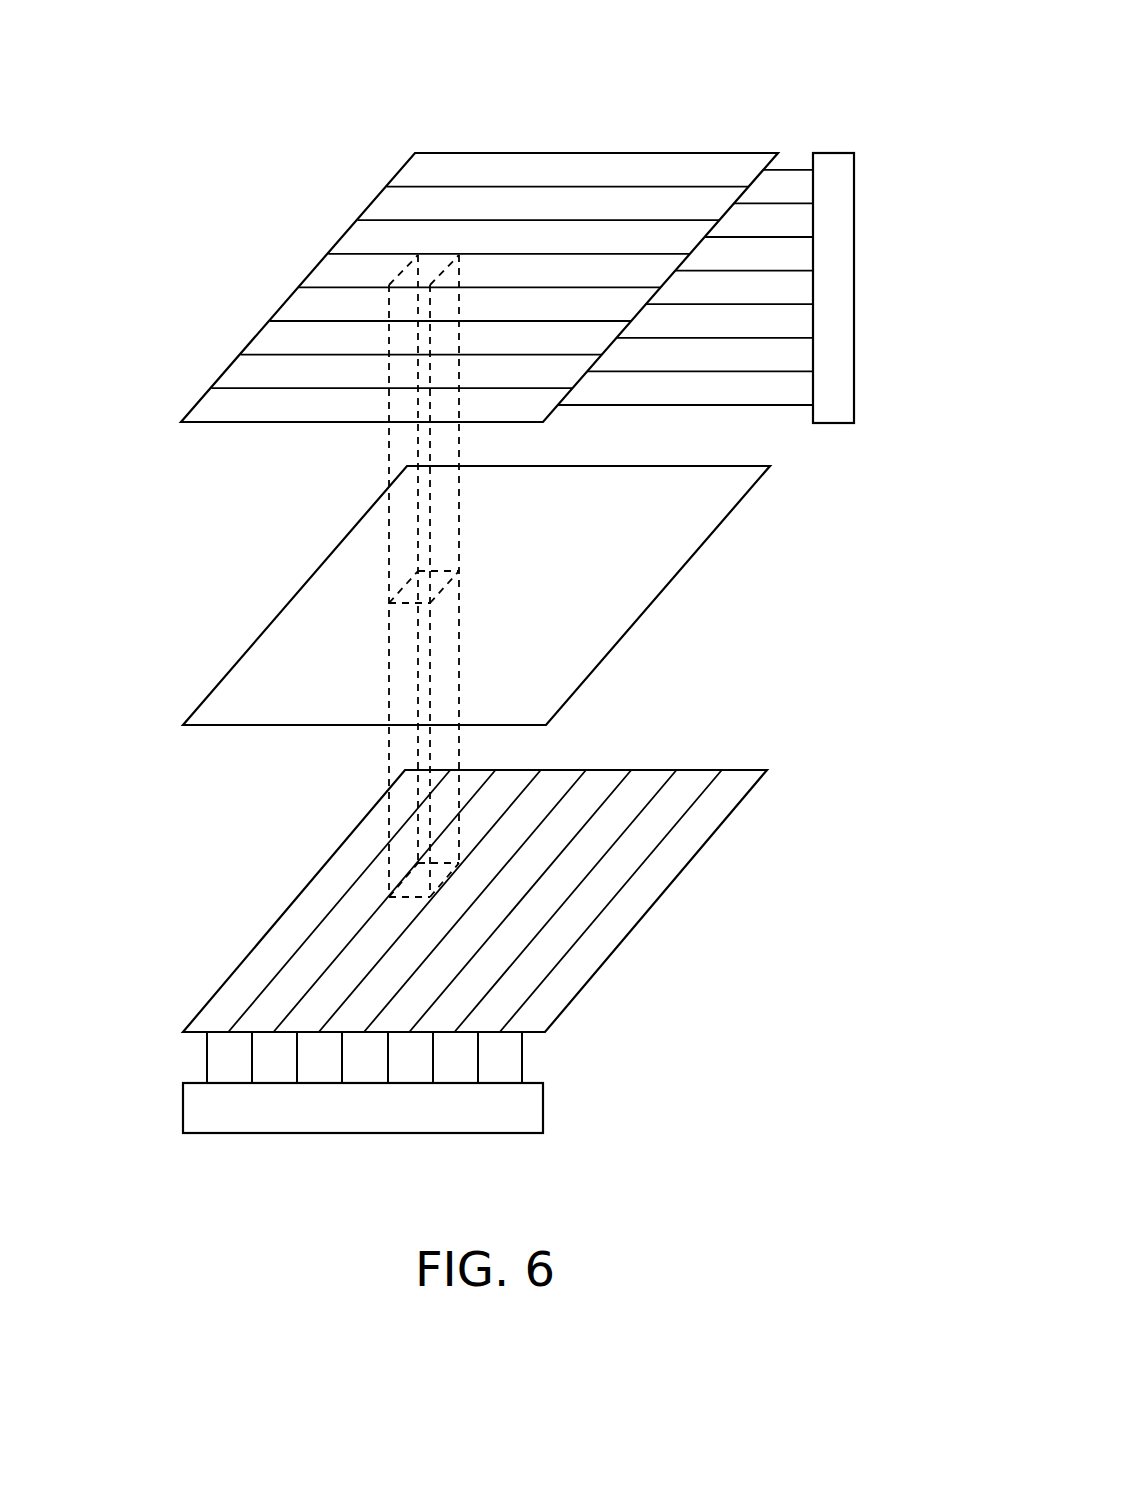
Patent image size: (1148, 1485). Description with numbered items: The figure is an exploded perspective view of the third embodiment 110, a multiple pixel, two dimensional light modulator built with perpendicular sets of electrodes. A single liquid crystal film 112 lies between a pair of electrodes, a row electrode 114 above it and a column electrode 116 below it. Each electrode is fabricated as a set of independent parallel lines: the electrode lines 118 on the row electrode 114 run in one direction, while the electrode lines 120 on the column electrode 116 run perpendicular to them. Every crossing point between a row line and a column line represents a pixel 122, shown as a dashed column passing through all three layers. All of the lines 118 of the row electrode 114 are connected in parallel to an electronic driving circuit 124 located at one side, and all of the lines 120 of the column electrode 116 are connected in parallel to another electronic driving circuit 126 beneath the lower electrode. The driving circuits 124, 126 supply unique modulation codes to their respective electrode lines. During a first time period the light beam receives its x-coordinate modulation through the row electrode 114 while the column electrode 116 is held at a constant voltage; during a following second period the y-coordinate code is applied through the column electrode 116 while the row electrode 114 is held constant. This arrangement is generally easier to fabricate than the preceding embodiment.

The third embodiment 110 is at (300, 113).
The liquid crystal film 112 is at (220, 725).
The row electrode 114 is at (207, 434).
The column electrode 116 is at (722, 843).
The electrode lines 118 is at (532, 201).
The electrode lines 120 is at (535, 917).
The pixel 122 is at (424, 587).
The electronic driving circuit 124 is at (855, 283).
The electronic driving circuit 126 is at (275, 1134).